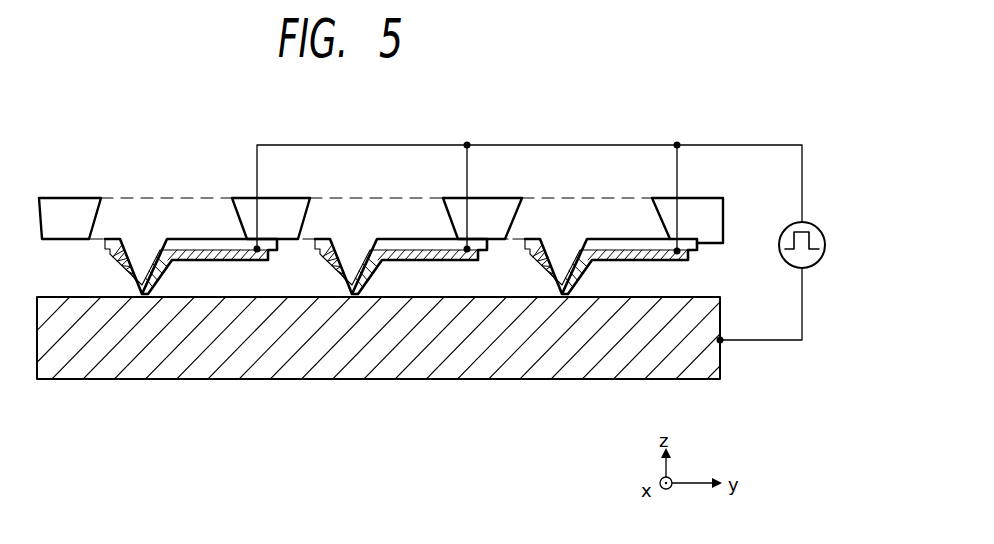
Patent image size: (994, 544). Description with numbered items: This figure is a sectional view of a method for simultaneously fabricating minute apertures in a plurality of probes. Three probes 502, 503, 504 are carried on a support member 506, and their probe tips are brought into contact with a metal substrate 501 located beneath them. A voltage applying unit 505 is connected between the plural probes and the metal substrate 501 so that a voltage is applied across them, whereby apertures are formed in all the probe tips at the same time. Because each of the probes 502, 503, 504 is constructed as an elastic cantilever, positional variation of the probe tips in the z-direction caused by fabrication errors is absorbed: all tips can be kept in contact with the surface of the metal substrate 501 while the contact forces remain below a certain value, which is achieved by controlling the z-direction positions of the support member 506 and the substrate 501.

The metal substrate 501 is at (512, 368).
The probe 502 is at (130, 283).
The probe 503 is at (340, 283).
The probe 504 is at (550, 283).
The voltage applying unit 505 is at (826, 243).
The support member 506 is at (665, 203).